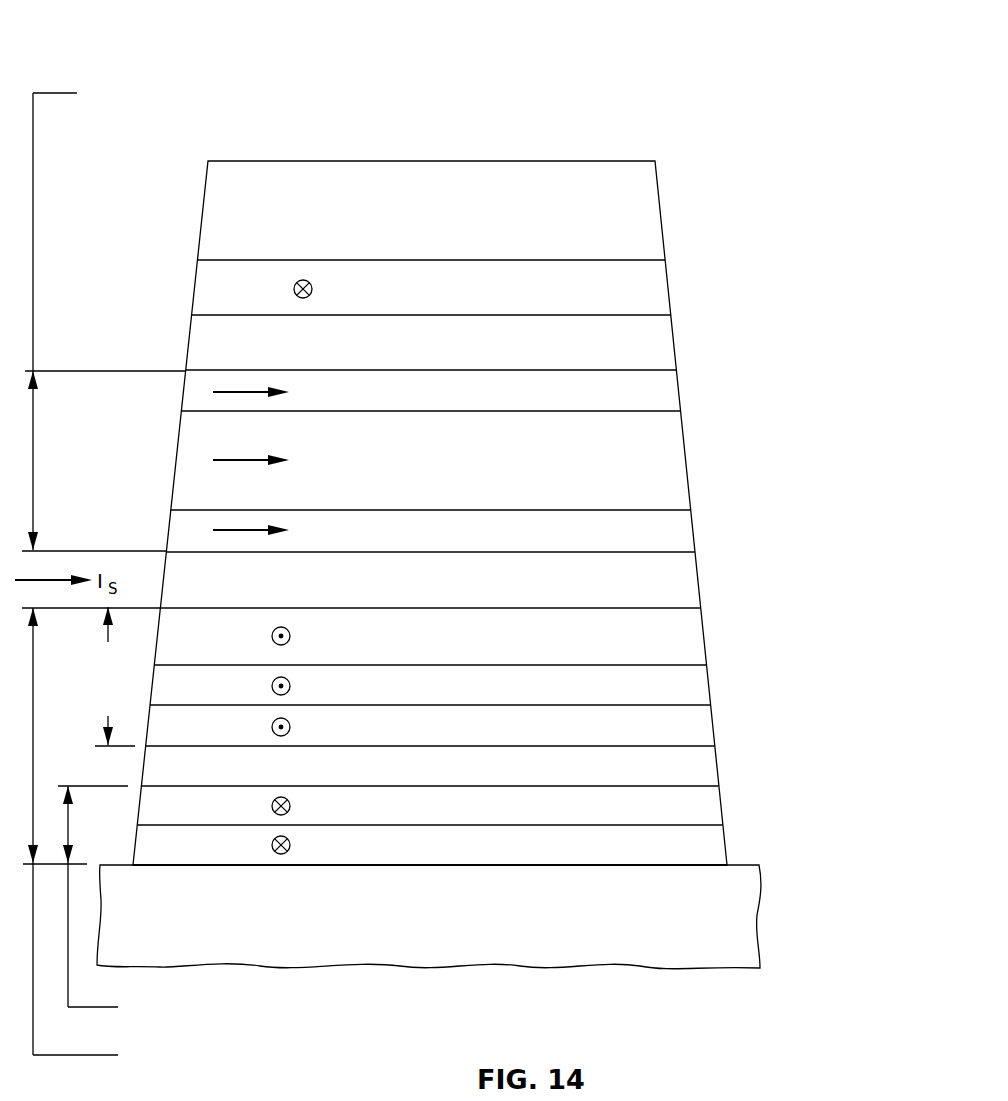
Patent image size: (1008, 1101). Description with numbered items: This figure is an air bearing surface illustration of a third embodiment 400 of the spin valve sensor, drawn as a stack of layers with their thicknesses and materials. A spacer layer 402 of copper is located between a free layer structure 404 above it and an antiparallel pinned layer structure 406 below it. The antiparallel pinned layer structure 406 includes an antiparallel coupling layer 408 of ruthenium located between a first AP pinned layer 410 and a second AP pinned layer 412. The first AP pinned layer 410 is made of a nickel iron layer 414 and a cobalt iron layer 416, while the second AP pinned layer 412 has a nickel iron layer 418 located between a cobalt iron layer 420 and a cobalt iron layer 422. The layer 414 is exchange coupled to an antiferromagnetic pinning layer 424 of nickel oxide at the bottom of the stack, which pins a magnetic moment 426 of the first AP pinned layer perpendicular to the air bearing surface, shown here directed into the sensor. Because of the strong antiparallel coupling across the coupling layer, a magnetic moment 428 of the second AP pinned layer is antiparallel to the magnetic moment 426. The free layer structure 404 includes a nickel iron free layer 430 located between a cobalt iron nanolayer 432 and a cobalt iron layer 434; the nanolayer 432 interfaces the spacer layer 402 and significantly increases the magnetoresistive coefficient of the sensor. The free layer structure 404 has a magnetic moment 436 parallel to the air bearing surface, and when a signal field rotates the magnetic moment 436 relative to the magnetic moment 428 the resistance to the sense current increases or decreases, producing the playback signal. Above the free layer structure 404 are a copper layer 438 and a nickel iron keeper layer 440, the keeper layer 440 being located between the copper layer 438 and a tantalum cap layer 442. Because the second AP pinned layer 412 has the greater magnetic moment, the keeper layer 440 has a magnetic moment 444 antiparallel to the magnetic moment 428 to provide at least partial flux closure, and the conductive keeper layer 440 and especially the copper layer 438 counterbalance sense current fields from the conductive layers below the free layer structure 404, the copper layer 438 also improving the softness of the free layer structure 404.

The third embodiment 400 is at (556, 112).
The spacer layer 402 is at (698, 578).
The free layer structure 404 is at (136, 317).
The antiparallel pinned layer structure 406 is at (162, 851).
The antiparallel coupling layer 408 is at (717, 765).
The first AP pinned layer 410 is at (133, 904).
The second AP pinned layer 412 is at (108, 676).
The first layer of first AP pinned layer 414 is at (725, 845).
The second layer of first AP pinned layer 416 is at (721, 807).
The first layer of second AP pinned layer 418 is at (708, 683).
The second layer of second AP pinned layer 420 is at (713, 728).
The third layer of second AP pinned layer 422 is at (703, 633).
The antiferromagnetic pinning layer 424 is at (757, 932).
The magnetic moment of first AP pinned layer 426 is at (272, 806).
The magnetic moment of second AP pinned layer 428 is at (272, 636).
The free layer 430 is at (685, 455).
The nanolayer 432 is at (693, 532).
The cobalt iron layer 434 is at (678, 390).
The magnetic moment of free layer structure 436 is at (238, 392).
The copper layer 438 is at (673, 342).
The keeper layer 440 is at (668, 288).
The cap layer 442 is at (659, 205).
The magnetic moment of keeper layer 444 is at (294, 289).